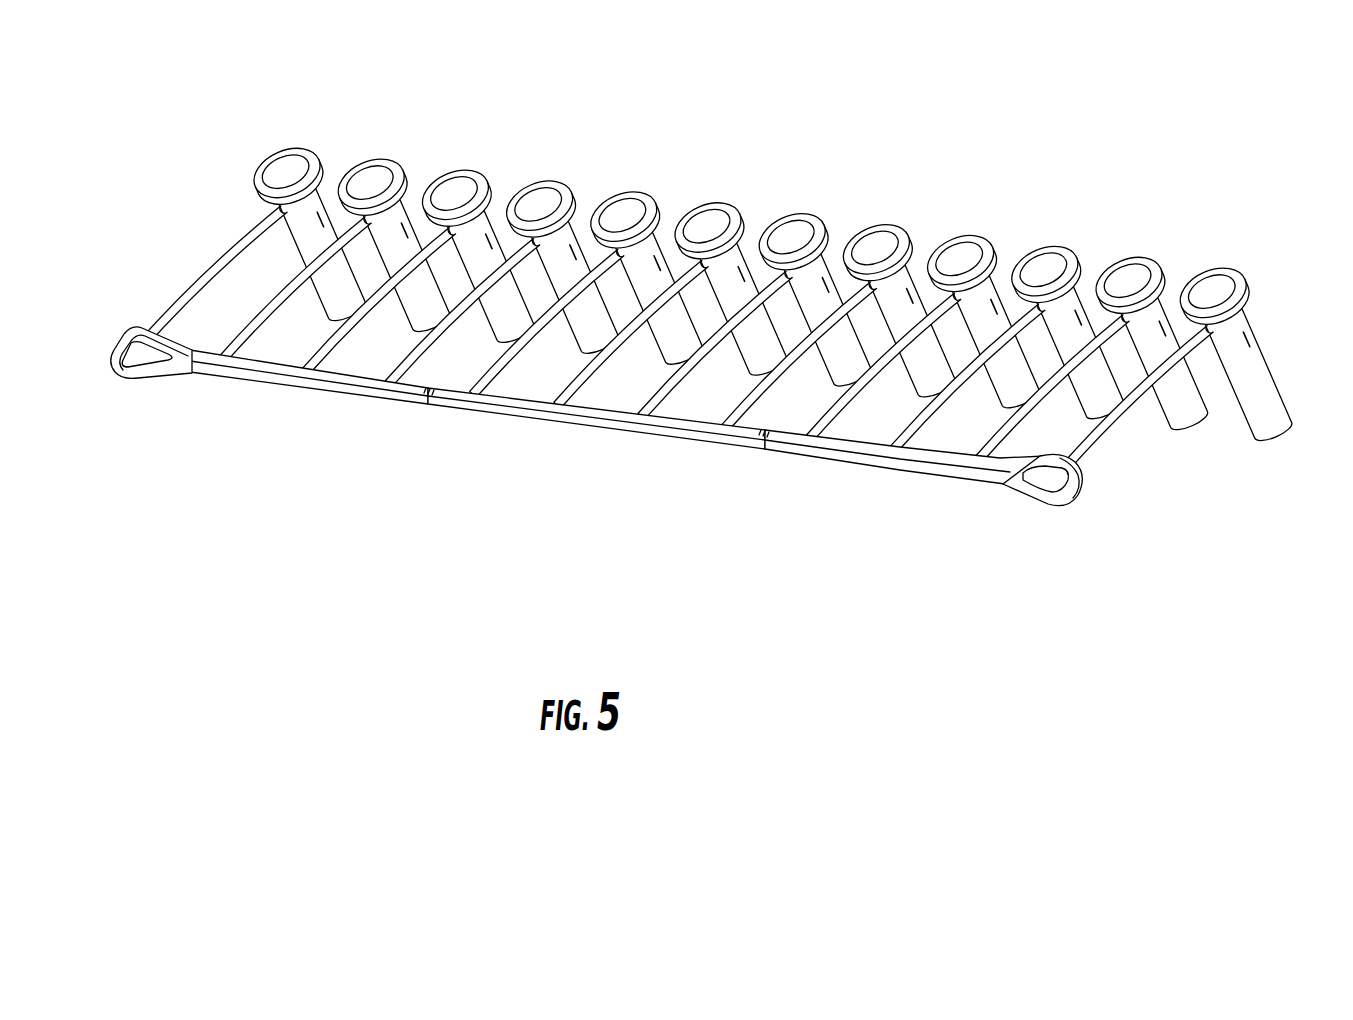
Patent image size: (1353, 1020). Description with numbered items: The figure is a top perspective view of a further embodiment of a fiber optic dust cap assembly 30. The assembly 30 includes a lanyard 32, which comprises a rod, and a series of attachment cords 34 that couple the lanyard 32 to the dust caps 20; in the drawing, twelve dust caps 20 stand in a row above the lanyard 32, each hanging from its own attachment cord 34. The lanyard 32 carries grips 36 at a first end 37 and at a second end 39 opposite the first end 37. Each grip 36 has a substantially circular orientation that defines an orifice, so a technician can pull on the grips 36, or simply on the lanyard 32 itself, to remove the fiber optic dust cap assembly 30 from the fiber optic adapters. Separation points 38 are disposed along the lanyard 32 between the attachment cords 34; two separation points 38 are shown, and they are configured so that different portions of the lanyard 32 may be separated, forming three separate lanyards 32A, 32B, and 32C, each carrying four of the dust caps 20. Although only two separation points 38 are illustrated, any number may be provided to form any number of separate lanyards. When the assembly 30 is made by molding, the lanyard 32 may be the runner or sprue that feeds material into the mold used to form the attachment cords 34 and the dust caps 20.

The dust cap 20 is at (1260, 344).
The fiber optic dust cap assembly 30 is at (467, 95).
The lanyard 32 is at (576, 493).
The separate lanyard 32A is at (413, 441).
The separate lanyard 32B is at (737, 497).
The separate lanyard 32C is at (904, 517).
The attachment cord 34 is at (212, 272).
The grip 36 is at (132, 359).
The first end 37 is at (1083, 505).
The separation point 38 is at (428, 401).
The second end 39 is at (123, 322).